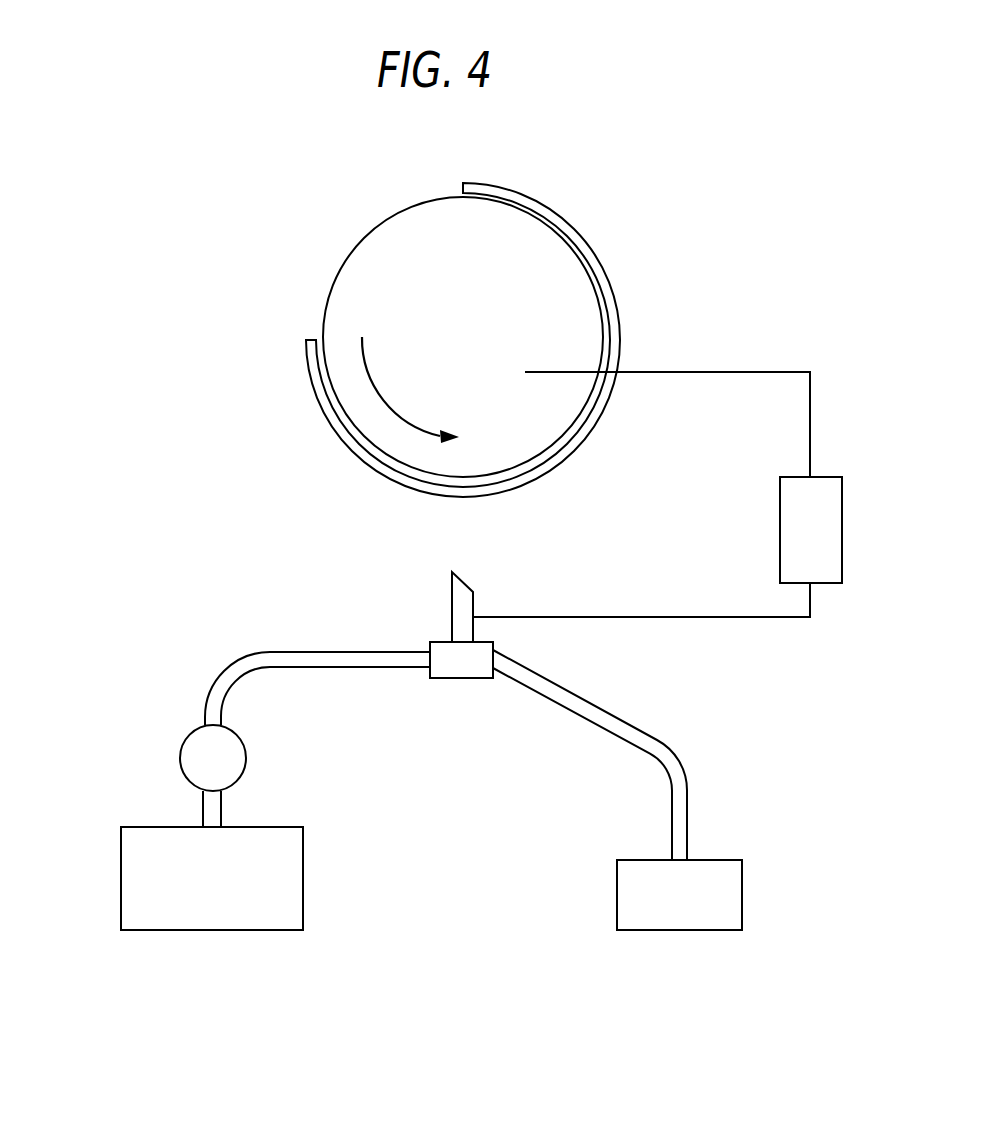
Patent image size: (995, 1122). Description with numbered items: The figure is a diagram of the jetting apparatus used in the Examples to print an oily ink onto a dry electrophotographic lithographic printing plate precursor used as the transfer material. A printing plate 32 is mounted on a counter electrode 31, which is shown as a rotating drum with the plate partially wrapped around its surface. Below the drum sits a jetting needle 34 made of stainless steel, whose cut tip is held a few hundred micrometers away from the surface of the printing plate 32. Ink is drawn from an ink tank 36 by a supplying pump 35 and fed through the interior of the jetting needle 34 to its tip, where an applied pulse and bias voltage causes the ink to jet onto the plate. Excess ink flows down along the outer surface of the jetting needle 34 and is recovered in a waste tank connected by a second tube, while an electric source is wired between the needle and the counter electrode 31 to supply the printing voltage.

The counter electrode 31 is at (463, 245).
The printing plate 32 is at (585, 237).
The jetting needle 34 is at (433, 620).
The supplying pump 35 is at (193, 759).
The ink tank 36 is at (140, 872).